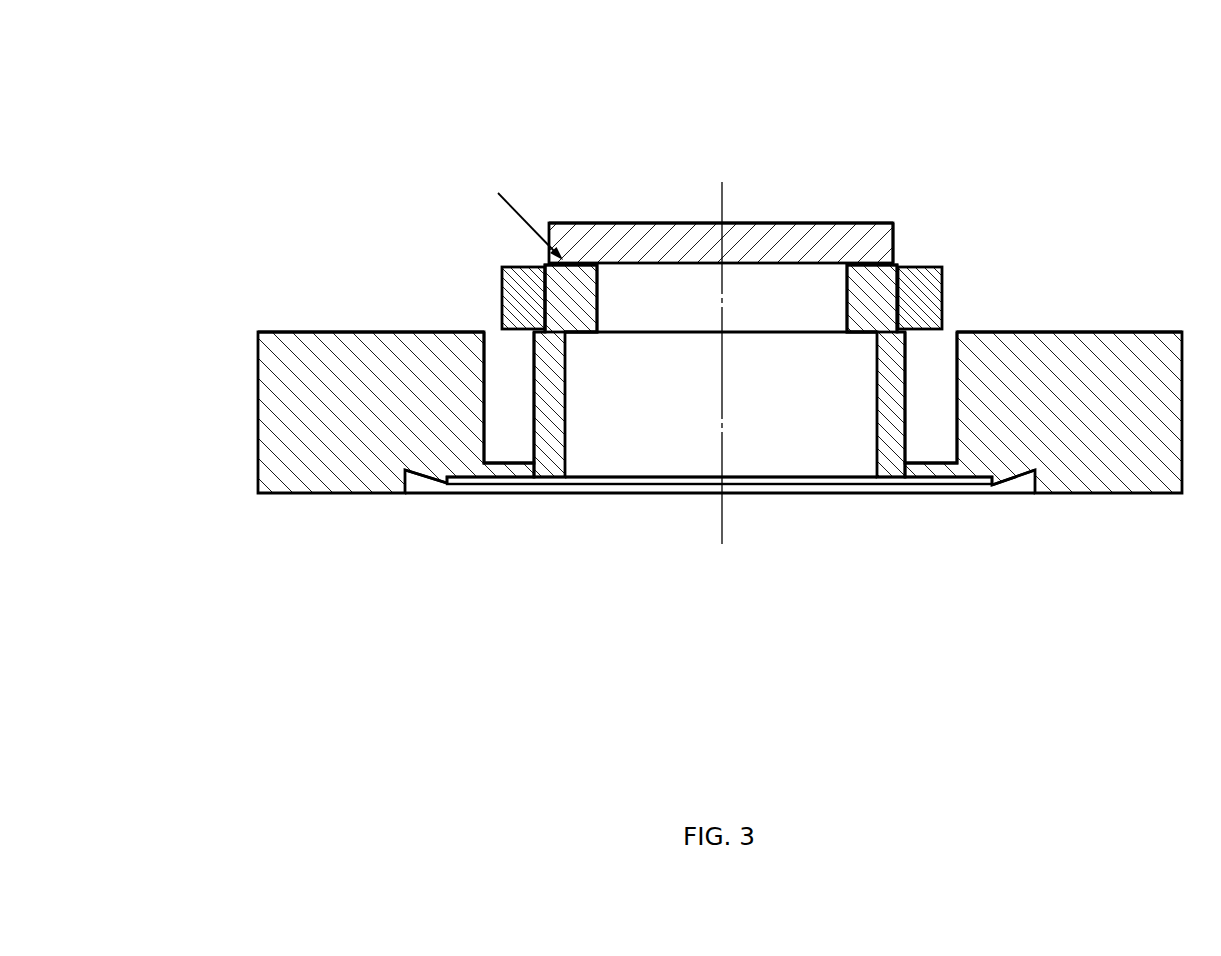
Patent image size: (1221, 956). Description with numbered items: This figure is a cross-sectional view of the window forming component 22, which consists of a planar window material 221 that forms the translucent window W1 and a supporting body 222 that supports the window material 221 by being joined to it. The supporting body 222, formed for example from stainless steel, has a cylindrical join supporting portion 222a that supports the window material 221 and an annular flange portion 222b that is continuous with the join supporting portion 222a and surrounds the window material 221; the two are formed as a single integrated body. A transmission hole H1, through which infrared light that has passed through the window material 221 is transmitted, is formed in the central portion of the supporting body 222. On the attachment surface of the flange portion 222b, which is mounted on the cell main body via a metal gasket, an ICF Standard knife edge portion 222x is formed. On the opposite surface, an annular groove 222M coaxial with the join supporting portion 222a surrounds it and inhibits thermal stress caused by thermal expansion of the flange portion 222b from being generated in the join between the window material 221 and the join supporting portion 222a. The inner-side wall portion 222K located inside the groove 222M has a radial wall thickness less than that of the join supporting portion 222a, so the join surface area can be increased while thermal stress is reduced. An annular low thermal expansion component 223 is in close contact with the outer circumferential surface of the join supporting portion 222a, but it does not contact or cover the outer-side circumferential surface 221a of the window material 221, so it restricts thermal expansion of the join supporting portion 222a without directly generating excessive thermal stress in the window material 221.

The window forming component 22 is at (380, 97).
The window material 221 is at (588, 223).
The translucent window W1 is at (783, 223).
The outer-side circumferential surface of the window material 221a is at (897, 240).
The low thermal expansion component 223 is at (502, 290).
The flange portion 222b is at (345, 332).
The join supporting portion 222a is at (598, 298).
The inner-side wall portion 222K is at (556, 368).
The groove 222M is at (501, 388).
The supporting body 222 is at (258, 413).
The knife edge portion 222x is at (445, 483).
The transmission hole H1 is at (797, 405).